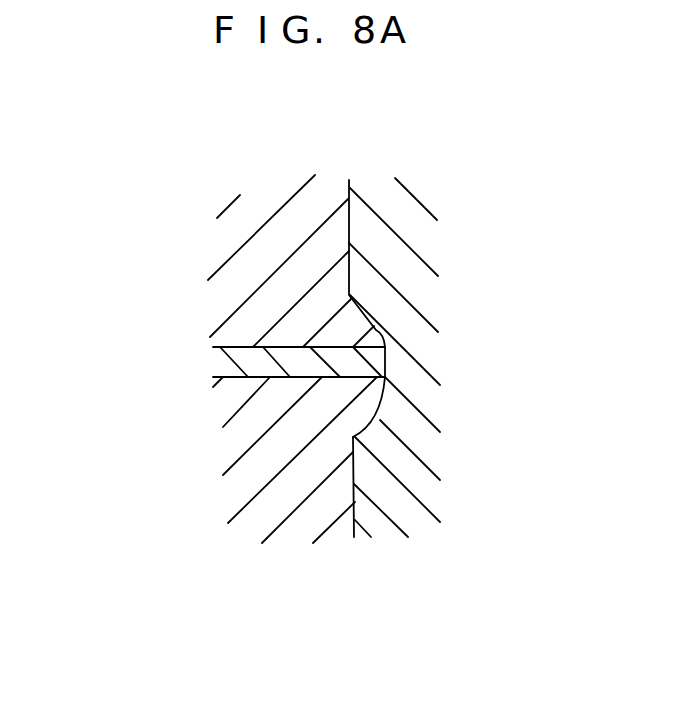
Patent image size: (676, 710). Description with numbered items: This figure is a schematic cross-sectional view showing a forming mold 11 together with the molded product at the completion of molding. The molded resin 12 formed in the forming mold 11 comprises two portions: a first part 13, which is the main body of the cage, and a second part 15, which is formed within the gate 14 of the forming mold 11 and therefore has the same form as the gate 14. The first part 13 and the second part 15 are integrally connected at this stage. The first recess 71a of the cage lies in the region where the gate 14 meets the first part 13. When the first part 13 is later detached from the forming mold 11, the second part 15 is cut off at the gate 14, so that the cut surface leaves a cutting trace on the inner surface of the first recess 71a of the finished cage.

The forming mold 11 is at (285, 507).
The molded resin 12 is at (353, 472).
The first part 13 is at (412, 265).
The gate 14 is at (240, 345).
The second part 15 is at (292, 345).
The first recess 71a is at (380, 416).